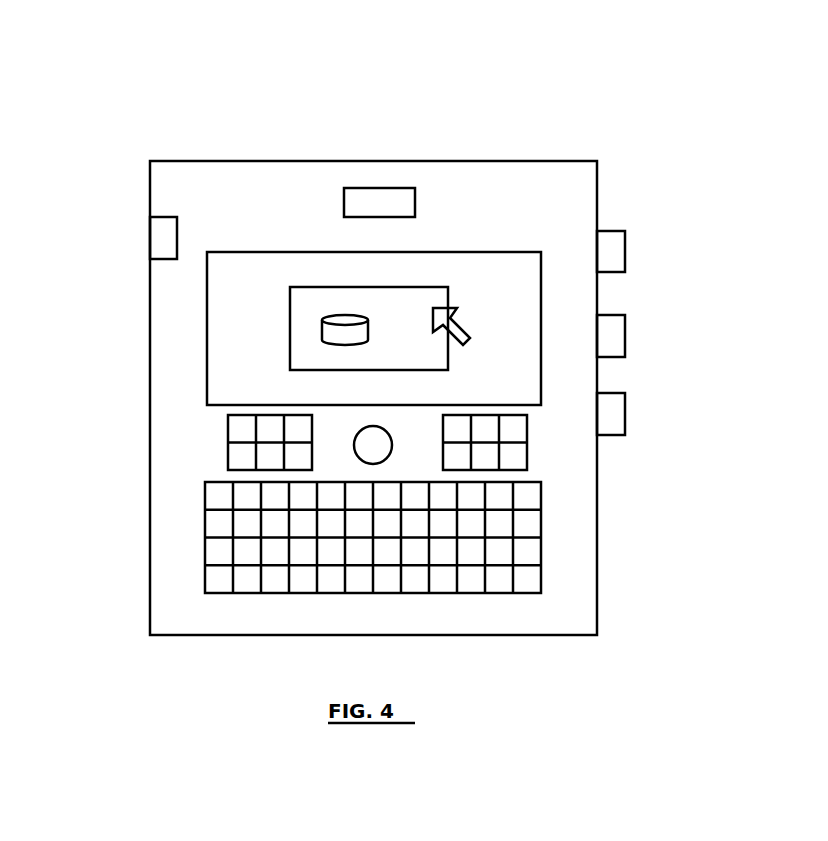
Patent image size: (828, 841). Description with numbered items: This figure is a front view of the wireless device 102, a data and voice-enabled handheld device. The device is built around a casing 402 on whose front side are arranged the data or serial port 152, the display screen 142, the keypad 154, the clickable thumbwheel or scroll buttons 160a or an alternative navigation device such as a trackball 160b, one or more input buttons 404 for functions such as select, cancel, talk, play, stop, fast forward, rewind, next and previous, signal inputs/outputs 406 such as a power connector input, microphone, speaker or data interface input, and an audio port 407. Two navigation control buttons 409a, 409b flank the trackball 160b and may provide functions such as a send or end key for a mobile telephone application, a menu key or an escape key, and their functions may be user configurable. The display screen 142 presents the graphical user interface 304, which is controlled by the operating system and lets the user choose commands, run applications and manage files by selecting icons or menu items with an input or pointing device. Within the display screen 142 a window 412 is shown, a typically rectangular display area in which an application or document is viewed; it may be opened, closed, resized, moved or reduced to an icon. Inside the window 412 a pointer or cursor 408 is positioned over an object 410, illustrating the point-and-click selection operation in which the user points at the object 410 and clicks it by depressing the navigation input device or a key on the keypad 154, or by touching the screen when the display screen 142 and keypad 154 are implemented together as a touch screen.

The wireless device 102 is at (563, 68).
The casing 402 is at (262, 190).
The data or serial port 152 is at (165, 238).
The signal inputs/outputs 406 is at (387, 188).
The display screen 142 is at (203, 287).
The graphical user interface 304 is at (220, 314).
The window 412 is at (415, 301).
The object 410 is at (322, 328).
The pointer or cursor 408 is at (468, 340).
The navigation control button 409a is at (228, 427).
The trackball 160b is at (378, 463).
The navigation control button 409b is at (527, 437).
The keypad 154 is at (542, 523).
The clickable thumbwheel or scroll buttons 160a is at (625, 245).
The input buttons 404 is at (625, 330).
The audio port 407 is at (625, 408).